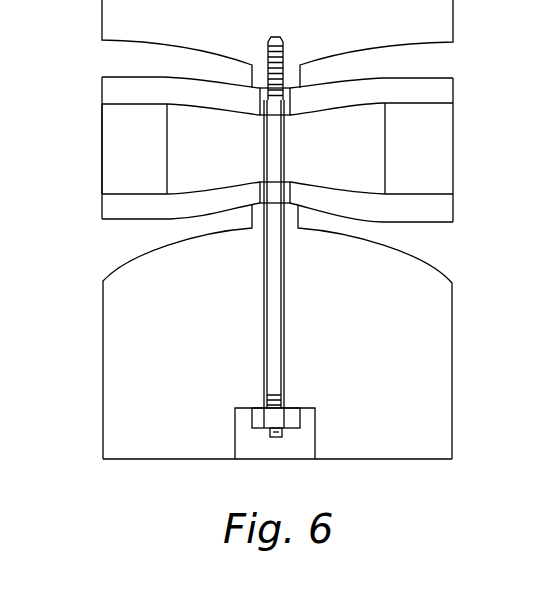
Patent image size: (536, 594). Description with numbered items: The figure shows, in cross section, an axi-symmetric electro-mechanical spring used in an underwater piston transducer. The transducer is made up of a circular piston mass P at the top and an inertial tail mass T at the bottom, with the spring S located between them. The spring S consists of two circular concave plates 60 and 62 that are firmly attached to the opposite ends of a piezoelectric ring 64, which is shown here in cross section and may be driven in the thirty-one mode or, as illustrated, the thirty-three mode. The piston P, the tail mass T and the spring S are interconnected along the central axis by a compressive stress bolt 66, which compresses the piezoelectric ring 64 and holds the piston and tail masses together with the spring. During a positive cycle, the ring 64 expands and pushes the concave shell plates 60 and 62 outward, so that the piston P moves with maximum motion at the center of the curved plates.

The circular concave plate 60 is at (445, 88).
The circular concave plate 62 is at (443, 208).
The piezoelectric ring 64 is at (110, 175).
The compressive stress bolt 66 is at (271, 434).
The piston mass P is at (290, 29).
The spring S is at (90, 126).
The tail mass T is at (350, 383).